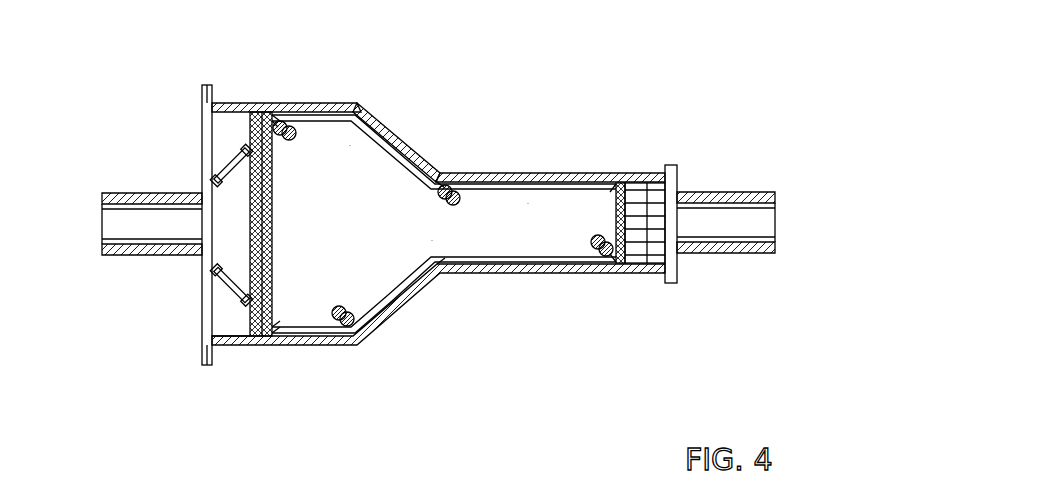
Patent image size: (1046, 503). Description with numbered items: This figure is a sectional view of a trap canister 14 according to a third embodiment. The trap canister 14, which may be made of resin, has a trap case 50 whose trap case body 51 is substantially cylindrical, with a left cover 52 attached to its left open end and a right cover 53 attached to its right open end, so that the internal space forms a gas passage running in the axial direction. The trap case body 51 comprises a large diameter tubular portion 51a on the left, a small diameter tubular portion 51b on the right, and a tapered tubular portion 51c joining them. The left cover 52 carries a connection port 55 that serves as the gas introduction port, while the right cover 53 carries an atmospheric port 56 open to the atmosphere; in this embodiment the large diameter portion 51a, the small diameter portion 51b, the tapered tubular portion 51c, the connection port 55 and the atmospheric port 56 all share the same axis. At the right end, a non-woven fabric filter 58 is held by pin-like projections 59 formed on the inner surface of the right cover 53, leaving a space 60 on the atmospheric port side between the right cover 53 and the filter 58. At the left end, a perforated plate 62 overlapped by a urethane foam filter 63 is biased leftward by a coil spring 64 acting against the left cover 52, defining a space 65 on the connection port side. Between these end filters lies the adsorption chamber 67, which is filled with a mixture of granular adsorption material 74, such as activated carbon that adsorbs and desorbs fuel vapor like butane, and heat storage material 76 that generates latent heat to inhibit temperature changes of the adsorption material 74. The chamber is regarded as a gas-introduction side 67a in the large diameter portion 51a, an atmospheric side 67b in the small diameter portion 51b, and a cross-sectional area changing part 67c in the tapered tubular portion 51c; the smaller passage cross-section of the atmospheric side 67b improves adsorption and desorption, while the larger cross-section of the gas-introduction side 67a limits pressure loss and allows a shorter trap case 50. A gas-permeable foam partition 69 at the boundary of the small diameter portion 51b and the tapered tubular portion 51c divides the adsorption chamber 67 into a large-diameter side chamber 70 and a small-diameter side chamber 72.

The trap canister 14 is at (518, 95).
The trap case 50 is at (403, 105).
The trap case body 51 is at (400, 300).
The large diameter tubular portion 51a is at (333, 103).
The small diameter tubular portion 51b is at (575, 178).
The tapered tubular portion 51c is at (415, 160).
The left cover 52 is at (200, 140).
The right cover 53 is at (677, 172).
The connection port 55 is at (125, 258).
The atmospheric port 56 is at (727, 255).
The filter 58 is at (621, 190).
The pin-like projections 59 is at (645, 275).
The space 60 is at (650, 184).
The perforated plate 62 is at (256, 340).
The filter 63 is at (285, 237).
The spring 64 is at (225, 275).
The space 65 is at (230, 325).
The adsorption chamber 67 is at (515, 258).
The gas-introduction side 67a is at (306, 318).
The atmospheric side 67b is at (545, 270).
The cross-sectional area changing part 67c is at (378, 160).
The gas-permeable partition 69 is at (435, 238).
The large-diameter side chamber 70 is at (352, 143).
The small-diameter side chamber 72 is at (530, 203).
The granular adsorption material 74 is at (278, 120).
The heat storage material 76 is at (285, 141).